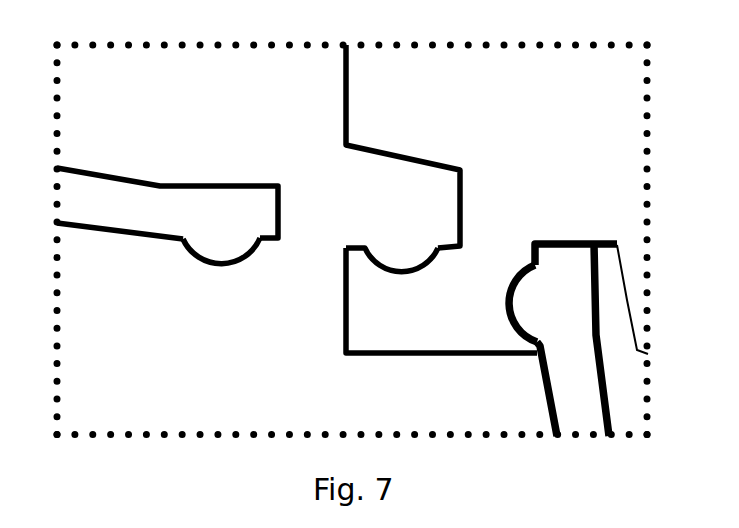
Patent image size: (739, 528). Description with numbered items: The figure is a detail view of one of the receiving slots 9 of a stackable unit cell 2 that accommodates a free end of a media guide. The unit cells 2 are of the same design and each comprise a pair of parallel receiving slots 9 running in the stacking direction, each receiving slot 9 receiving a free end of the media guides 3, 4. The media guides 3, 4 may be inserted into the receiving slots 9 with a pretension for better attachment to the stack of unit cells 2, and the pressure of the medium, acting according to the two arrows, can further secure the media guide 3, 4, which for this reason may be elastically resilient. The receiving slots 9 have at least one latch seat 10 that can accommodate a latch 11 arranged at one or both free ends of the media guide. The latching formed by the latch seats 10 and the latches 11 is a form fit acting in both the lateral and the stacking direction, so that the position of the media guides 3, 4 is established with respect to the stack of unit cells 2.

The unit cell 2 is at (517, 65).
The media guide 3 is at (160, 197).
The media guide 4 is at (590, 399).
The receiving slot 9 is at (458, 203).
The latch seat 10 is at (398, 268).
The latch 11 is at (222, 258).